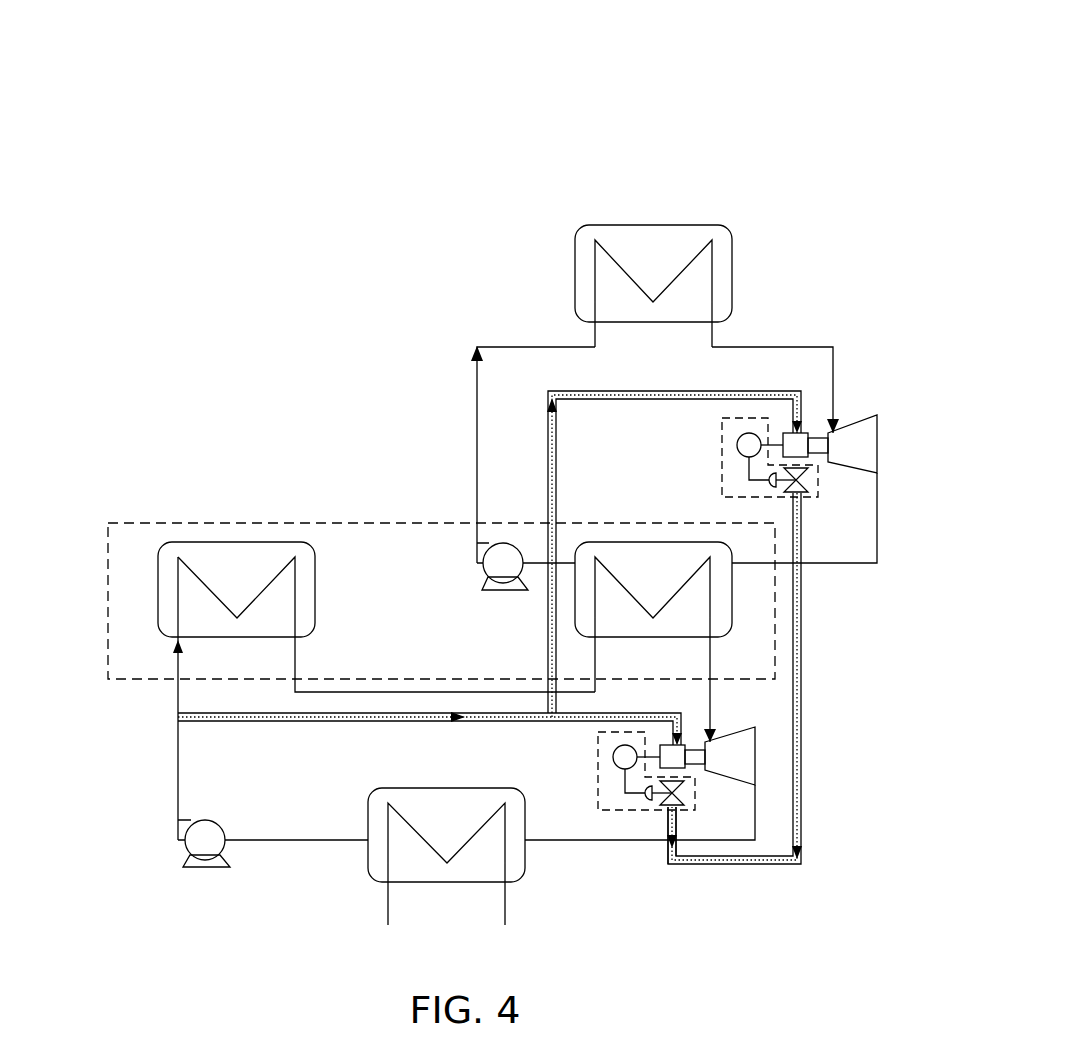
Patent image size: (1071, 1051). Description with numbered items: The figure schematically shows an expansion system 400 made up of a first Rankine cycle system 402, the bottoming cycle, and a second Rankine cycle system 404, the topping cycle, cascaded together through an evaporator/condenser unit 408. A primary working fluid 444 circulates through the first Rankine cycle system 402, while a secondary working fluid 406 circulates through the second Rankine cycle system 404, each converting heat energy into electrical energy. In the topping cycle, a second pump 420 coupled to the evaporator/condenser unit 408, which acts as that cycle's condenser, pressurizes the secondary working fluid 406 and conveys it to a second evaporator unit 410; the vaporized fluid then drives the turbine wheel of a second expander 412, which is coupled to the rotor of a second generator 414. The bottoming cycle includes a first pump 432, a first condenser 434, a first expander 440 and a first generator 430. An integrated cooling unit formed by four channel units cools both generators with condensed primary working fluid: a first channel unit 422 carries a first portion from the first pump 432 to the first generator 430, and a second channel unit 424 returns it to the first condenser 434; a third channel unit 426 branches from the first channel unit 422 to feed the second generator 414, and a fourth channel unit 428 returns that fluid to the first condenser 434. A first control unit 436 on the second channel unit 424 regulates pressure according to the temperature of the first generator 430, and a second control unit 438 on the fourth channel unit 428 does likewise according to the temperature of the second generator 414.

The expansion system 400 is at (760, 62).
The first Rankine cycle system 402 is at (246, 882).
The second Rankine cycle system 404 is at (446, 292).
The secondary working fluid 406 is at (477, 447).
The evaporator/condenser unit 408 is at (613, 638).
The second evaporator unit 410 is at (652, 224).
The second expander 412 is at (857, 415).
The second generator 414 is at (783, 437).
The second pump 420 is at (482, 572).
The first channel unit 422 is at (178, 714).
The second channel unit 424 is at (667, 830).
The third channel unit 426 is at (547, 655).
The fourth channel unit 428 is at (802, 710).
The first generator 430 is at (660, 750).
The first pump 432 is at (178, 830).
The first condenser 434 is at (447, 885).
The first control unit 436 is at (598, 800).
The second control unit 438 is at (722, 442).
The first expander 440 is at (735, 779).
The primary working fluid 444 is at (178, 772).